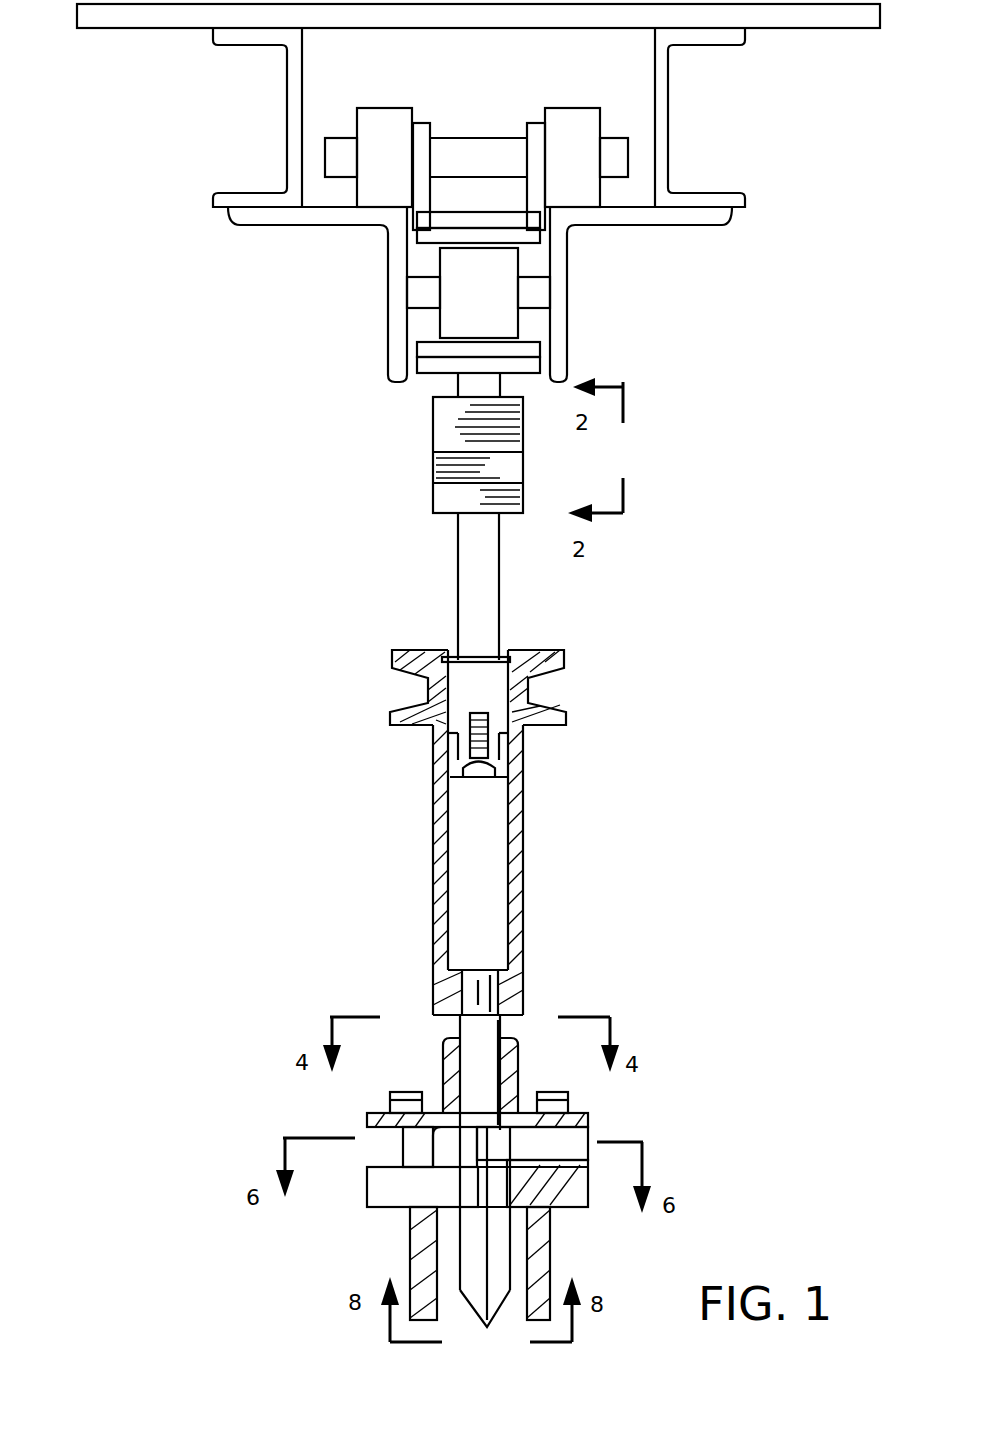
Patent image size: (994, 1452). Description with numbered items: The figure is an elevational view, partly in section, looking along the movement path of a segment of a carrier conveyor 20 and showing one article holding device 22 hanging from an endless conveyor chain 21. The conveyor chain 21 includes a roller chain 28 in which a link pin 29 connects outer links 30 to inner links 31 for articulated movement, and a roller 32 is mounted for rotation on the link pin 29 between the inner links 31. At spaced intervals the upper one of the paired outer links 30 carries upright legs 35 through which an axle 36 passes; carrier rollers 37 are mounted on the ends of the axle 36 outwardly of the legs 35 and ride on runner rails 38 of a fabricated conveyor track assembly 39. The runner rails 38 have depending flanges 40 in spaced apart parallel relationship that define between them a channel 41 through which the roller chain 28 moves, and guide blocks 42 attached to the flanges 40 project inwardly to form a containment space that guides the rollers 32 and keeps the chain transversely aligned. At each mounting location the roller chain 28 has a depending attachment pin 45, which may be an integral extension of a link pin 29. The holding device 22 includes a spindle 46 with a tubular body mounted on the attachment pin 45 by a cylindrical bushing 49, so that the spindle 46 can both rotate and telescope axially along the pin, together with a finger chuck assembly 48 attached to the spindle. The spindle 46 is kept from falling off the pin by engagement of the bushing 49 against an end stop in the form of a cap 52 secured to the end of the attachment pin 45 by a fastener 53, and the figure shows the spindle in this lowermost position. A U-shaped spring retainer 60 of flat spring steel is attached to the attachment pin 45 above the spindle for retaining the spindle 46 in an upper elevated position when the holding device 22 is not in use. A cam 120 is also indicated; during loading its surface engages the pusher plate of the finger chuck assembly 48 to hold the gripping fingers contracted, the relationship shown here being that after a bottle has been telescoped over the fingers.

The carrier conveyor 20 is at (350, 576).
The endless conveyor chain 21 is at (618, 105).
The holding device 22 is at (408, 814).
The roller chain 28 is at (421, 385).
The link pin 29 is at (505, 383).
The outer links 30 is at (455, 212).
The inner links 31 is at (417, 238).
The roller 32 is at (520, 230).
The upright legs 35 is at (421, 123).
The axle 36 is at (325, 152).
The carrier rollers 37 is at (378, 108).
The runner rails 38 is at (262, 228).
The conveyor track assembly 39 is at (205, 204).
The depending flanges 40 is at (388, 373).
The channel 41 is at (413, 318).
The guide blocks 42 is at (407, 272).
The attachment pin 45 is at (458, 580).
The spindle 46 is at (433, 873).
The finger chuck assembly 48 is at (598, 1226).
The cylindrical bushing 49 is at (505, 688).
The cap 52 is at (505, 770).
The fastener 53 is at (480, 778).
The spring retainer 60 is at (425, 498).
The cam 120 is at (405, 1092).